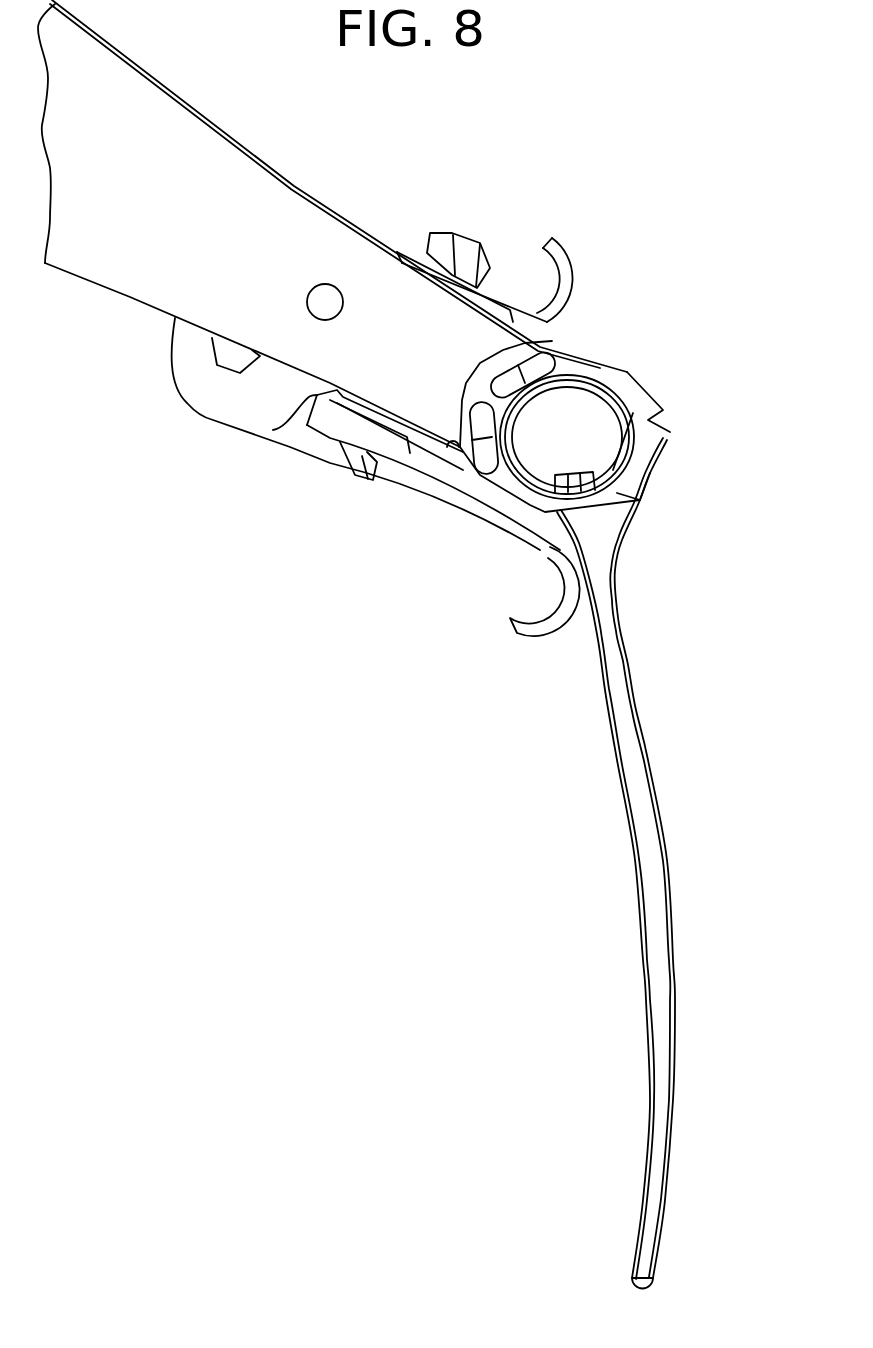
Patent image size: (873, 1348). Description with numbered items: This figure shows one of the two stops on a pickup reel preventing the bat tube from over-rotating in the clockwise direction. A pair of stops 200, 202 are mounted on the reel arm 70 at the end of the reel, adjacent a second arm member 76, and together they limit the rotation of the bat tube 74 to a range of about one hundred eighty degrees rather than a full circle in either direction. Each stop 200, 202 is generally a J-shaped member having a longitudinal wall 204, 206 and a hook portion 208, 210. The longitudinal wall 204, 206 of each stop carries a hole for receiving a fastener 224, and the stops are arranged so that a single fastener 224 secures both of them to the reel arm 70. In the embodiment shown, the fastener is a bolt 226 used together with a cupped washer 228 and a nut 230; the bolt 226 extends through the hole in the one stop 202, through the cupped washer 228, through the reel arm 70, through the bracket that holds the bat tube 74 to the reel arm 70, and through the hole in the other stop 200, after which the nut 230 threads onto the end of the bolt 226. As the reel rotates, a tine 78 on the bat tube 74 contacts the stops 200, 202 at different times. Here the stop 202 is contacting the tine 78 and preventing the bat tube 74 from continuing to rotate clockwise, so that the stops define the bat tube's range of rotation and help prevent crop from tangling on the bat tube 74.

The reel arm 70 is at (288, 187).
The bat tube 74 is at (586, 393).
The second member (lower arm) 76 is at (287, 438).
The tine 78 is at (686, 882).
The stop 200 is at (510, 246).
The stop 202 is at (500, 625).
The longitudinal wall 204 is at (403, 250).
The longitudinal wall 206 is at (434, 486).
The hook portion 208 is at (562, 241).
The hook portion 210 is at (509, 637).
The fastener 224 is at (433, 495).
The bolt 226 is at (362, 483).
The cupped washer 228 is at (273, 430).
The nut 230 is at (433, 238).